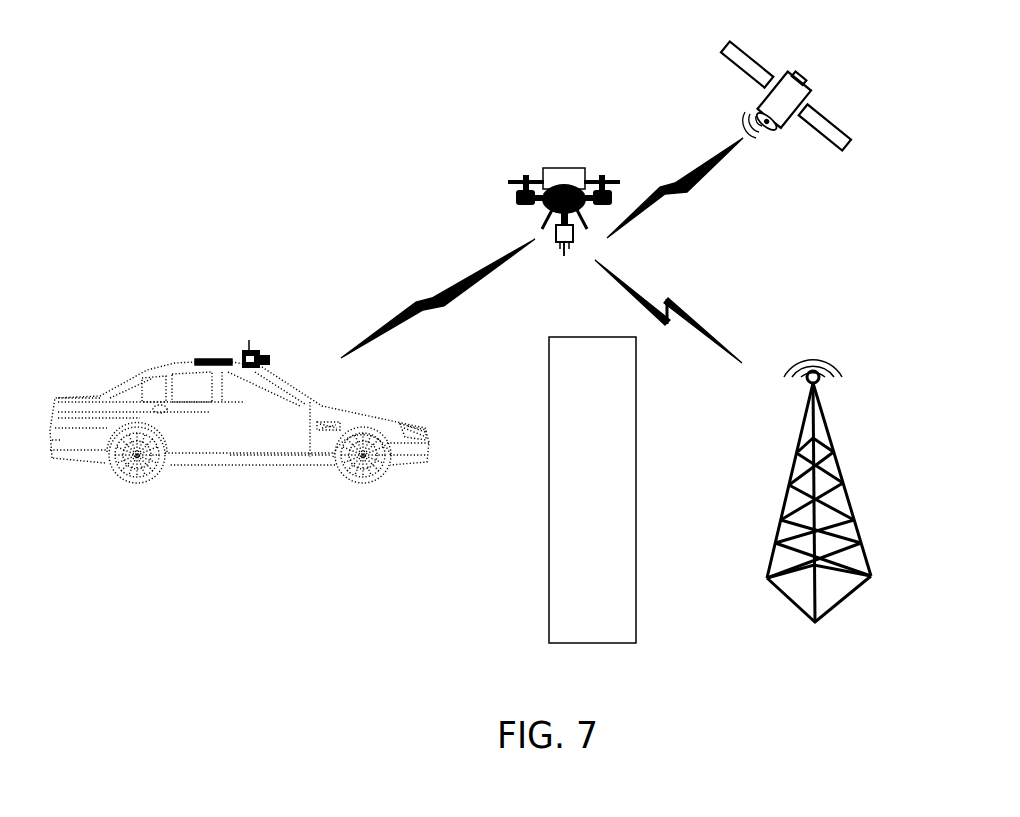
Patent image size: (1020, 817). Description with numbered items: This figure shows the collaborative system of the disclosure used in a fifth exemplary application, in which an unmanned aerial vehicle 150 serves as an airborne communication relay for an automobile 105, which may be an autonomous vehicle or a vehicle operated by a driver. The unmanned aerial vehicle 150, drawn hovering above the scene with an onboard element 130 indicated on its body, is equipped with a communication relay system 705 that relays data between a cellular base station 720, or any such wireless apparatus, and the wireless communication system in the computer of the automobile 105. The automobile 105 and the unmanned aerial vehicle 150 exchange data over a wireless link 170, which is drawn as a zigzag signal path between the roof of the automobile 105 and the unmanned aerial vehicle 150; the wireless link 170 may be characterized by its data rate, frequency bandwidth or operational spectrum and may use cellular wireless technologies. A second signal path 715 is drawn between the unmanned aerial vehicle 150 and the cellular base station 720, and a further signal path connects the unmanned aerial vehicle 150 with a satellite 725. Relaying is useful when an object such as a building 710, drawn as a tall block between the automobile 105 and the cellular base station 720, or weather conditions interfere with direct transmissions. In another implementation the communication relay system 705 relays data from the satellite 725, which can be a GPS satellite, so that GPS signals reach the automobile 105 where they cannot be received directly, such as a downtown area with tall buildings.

The automobile 105 is at (70, 345).
The controller / computer of UAV 130 is at (564, 178).
The unmanned aerial vehicle 150 is at (485, 189).
The wireless link 170 is at (431, 296).
The communication relay system 705 is at (557, 250).
The building 710 is at (592, 490).
The communication link between UAV and tower 715 is at (651, 305).
The cellular base station 720 is at (870, 413).
The satellite 725 is at (718, 89).